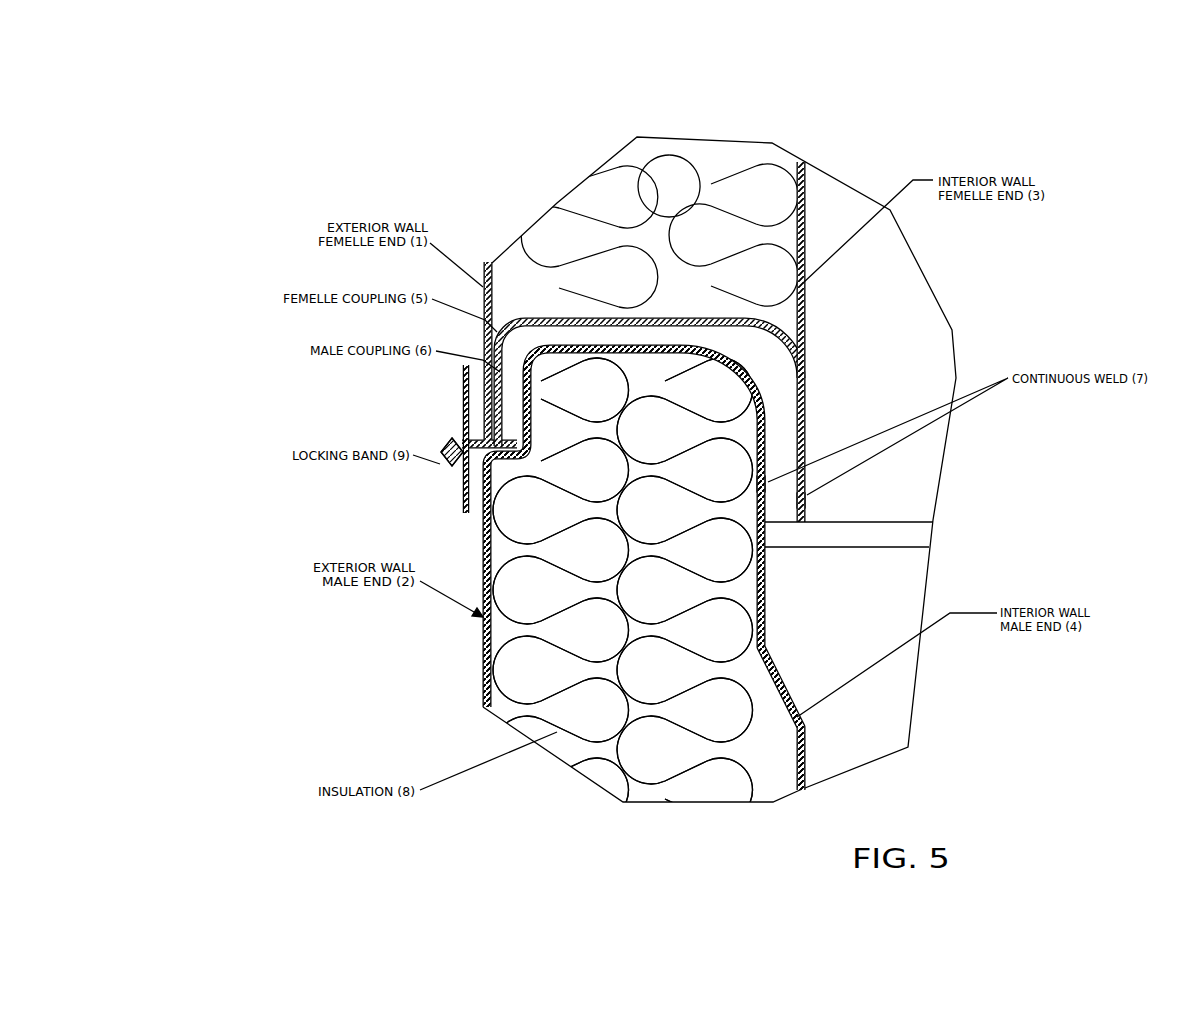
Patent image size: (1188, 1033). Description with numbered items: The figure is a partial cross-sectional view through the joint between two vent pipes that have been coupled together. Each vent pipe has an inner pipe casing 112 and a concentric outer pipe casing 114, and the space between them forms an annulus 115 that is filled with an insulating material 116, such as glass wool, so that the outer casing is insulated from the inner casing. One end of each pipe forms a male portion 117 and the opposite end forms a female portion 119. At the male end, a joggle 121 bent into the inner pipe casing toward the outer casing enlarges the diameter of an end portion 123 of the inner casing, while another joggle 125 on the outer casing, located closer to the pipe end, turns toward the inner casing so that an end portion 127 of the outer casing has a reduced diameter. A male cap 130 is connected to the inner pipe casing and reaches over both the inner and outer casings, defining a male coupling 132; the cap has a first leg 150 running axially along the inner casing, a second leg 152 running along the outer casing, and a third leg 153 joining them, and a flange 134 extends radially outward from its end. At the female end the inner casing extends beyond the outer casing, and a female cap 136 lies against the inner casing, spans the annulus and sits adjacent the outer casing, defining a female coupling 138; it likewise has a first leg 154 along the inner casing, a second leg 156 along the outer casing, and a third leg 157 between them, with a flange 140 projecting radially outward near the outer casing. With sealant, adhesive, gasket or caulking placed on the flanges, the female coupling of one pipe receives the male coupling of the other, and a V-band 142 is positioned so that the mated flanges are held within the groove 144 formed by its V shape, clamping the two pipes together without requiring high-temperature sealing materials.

The inner pipe casing 112 is at (805, 313).
The outer pipe casing 114 is at (483, 298).
The annulus 115 is at (693, 777).
The insulating material 116 is at (722, 172).
The male portion 117 is at (768, 578).
The female portion 119 is at (806, 364).
The joggle 121 is at (780, 690).
The end portion of the inner pipe casing 123 is at (760, 612).
The joggle 125 is at (463, 513).
The end portion of the outer pipe casing 127 is at (483, 402).
The male cap 130 is at (772, 407).
The male coupling 132 is at (805, 292).
The flange 134 is at (463, 473).
The female cap 136 is at (803, 327).
The female coupling 138 is at (803, 207).
The flange 140 is at (460, 428).
The V-band 142 is at (463, 375).
The groove 144 is at (447, 460).
The first leg of the male cap 150 is at (770, 522).
The second leg of the male cap 152 is at (493, 318).
The third leg of the male cap 153 is at (644, 346).
The first leg of the female cap 154 is at (785, 398).
The second leg of the female cap 156 is at (513, 384).
The third leg of the female cap 157 is at (573, 313).